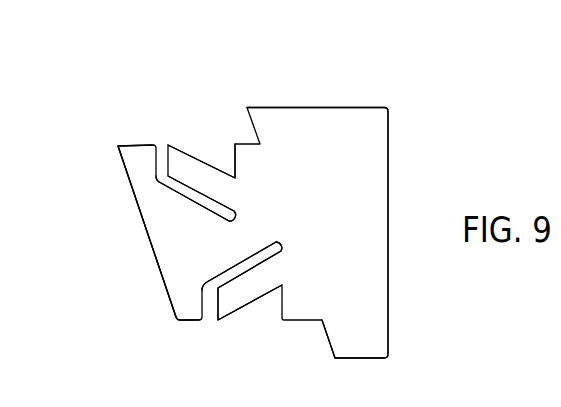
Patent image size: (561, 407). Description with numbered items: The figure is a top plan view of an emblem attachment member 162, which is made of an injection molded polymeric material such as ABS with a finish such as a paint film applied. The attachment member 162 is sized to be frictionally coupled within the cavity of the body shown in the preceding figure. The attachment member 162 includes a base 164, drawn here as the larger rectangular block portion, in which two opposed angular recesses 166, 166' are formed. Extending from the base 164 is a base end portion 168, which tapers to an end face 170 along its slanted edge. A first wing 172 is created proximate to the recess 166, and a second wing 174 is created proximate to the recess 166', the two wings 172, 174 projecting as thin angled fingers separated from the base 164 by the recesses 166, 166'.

The attachment member 162 is at (320, 75).
The base 164 is at (363, 122).
The angular recess 166 is at (205, 119).
The angular recess 166' is at (252, 339).
The base end portion 168 is at (157, 249).
The end face 170 is at (131, 224).
The first wing 172 is at (175, 160).
The second wing 174 is at (222, 303).